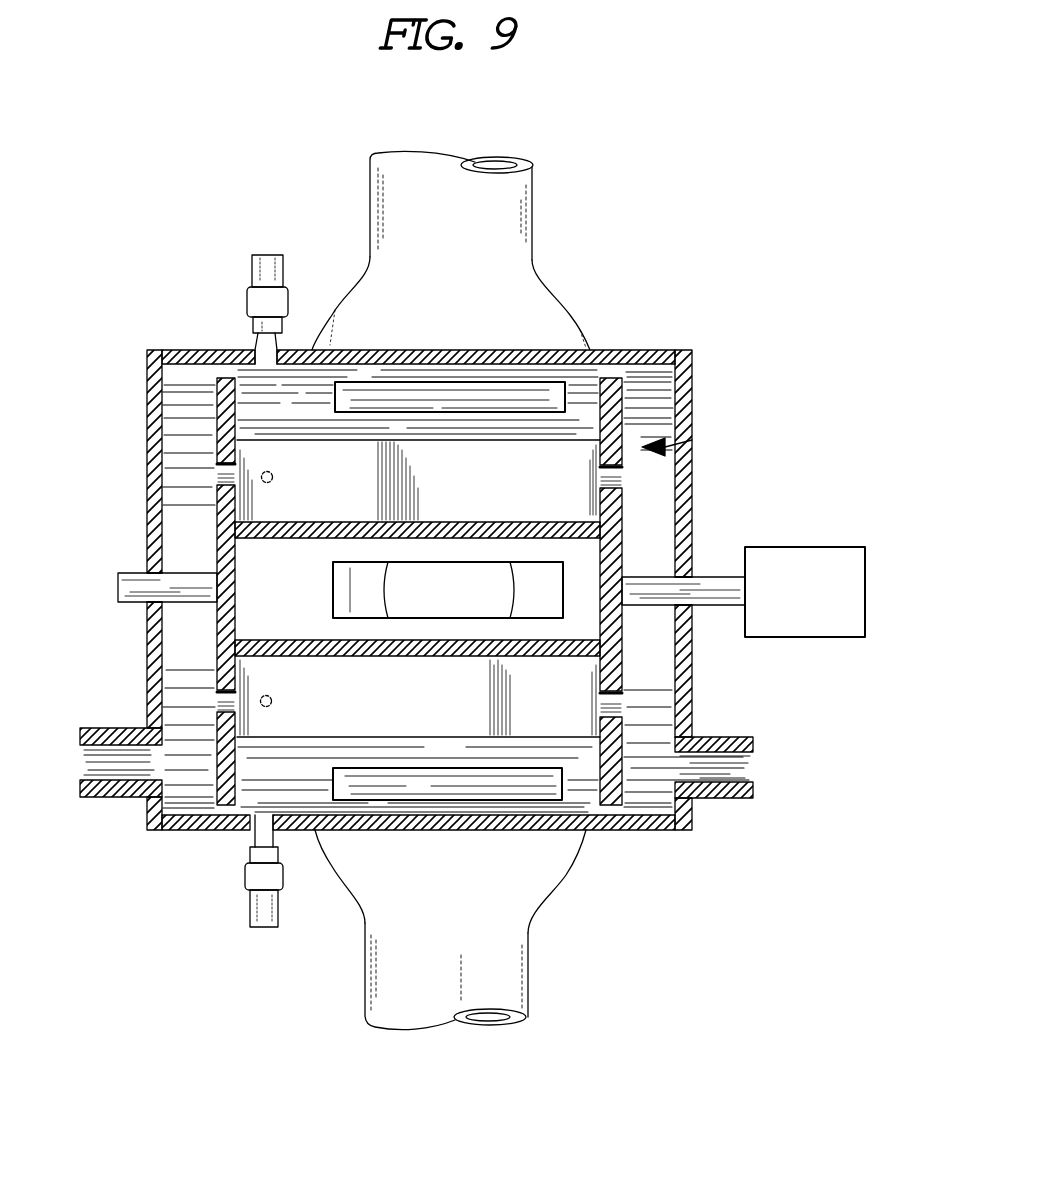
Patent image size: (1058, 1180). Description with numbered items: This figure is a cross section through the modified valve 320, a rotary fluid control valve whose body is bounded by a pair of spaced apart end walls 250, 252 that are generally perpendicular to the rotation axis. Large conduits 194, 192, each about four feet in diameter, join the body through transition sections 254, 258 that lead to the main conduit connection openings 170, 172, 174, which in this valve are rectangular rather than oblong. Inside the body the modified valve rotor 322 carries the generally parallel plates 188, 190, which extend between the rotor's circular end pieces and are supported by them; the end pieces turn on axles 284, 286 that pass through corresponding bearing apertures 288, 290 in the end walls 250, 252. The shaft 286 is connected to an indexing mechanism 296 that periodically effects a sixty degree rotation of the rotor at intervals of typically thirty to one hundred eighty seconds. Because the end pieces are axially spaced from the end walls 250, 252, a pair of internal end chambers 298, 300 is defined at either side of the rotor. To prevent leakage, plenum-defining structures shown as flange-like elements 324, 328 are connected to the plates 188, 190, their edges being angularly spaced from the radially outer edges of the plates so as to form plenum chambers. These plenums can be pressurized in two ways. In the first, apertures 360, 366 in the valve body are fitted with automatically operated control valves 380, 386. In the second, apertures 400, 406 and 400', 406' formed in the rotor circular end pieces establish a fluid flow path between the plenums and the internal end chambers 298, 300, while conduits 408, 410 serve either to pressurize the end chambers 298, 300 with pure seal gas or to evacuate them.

The modified valve 320 is at (819, 286).
The conduit 194 is at (532, 190).
The transition section 254 is at (560, 297).
The conduit 192 is at (528, 985).
The transition section 258 is at (377, 862).
The end wall 250 is at (152, 445).
The end wall 252 is at (693, 718).
The internal end chamber 298 is at (178, 407).
The internal end chamber 300 is at (652, 390).
The flange-like element 324 is at (552, 470).
The flange-like element 328 is at (533, 708).
The modified valve rotor 322 is at (668, 447).
The aperture 400 is at (700, 478).
The aperture 400' is at (137, 481).
The aperture 406 is at (703, 698).
The aperture 406' is at (137, 707).
The parallel plate 188 is at (360, 527).
The parallel plate 190 is at (494, 645).
The main conduit connection opening 170 is at (433, 410).
The main conduit connection opening 172 is at (373, 562).
The main conduit connection opening 174 is at (393, 777).
The axle 284 is at (143, 600).
The bearing aperture 288 is at (143, 580).
The axle 286 is at (720, 603).
The bearing aperture 290 is at (697, 585).
The indexing mechanism 296 is at (850, 548).
The conduit 408 is at (120, 797).
The conduit 410 is at (723, 798).
The aperture 360 is at (263, 362).
The control valve 380 is at (286, 298).
The aperture 366 is at (248, 806).
The control valve 386 is at (248, 890).